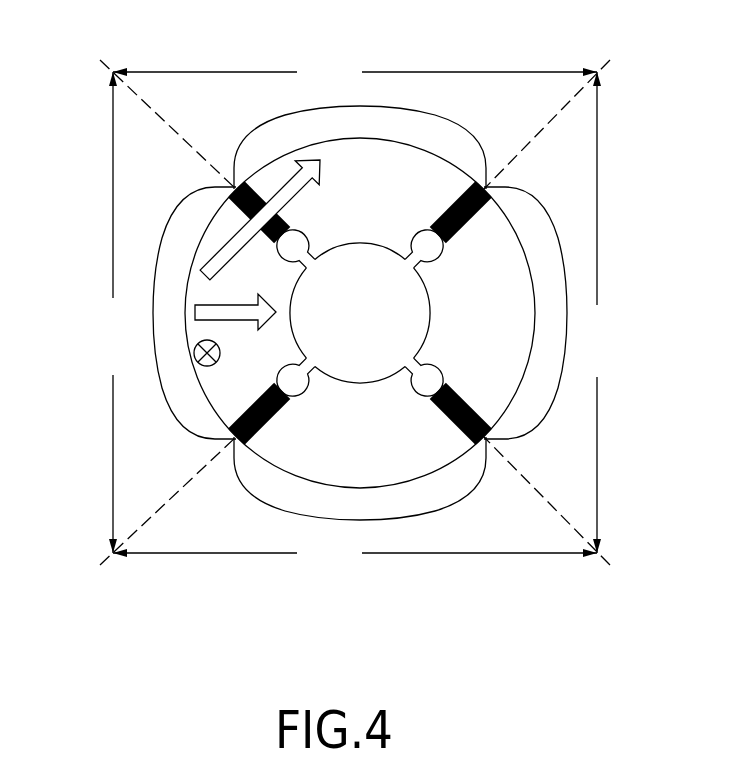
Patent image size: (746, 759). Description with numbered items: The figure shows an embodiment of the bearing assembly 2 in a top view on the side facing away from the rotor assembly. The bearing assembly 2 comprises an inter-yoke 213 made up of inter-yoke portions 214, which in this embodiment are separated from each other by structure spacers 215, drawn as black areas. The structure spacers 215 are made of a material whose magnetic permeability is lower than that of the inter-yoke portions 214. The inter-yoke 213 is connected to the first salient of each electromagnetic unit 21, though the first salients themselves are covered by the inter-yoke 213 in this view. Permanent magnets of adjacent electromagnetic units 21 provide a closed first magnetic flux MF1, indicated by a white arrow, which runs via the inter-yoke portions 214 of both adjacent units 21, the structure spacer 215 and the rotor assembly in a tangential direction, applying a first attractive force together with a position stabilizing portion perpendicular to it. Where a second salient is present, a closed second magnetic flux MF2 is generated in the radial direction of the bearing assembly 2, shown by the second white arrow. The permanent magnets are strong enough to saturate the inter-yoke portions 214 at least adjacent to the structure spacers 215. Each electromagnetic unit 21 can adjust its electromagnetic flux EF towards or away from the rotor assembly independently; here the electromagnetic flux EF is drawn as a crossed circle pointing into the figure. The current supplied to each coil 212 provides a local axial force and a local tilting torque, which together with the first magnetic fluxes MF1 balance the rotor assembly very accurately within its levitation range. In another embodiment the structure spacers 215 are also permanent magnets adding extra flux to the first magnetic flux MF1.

The bearing assembly 2 is at (125, 160).
The electromagnetic unit 21 is at (356, 310).
The coil 212 is at (360, 321).
The inter-yoke 213 is at (300, 323).
The inter-yoke portion 214 is at (360, 313).
The structure spacer 215 is at (453, 304).
The first magnetic flux MF1 is at (243, 233).
The second magnetic flux MF2 is at (195, 303).
The electromagnetic flux EF is at (193, 357).